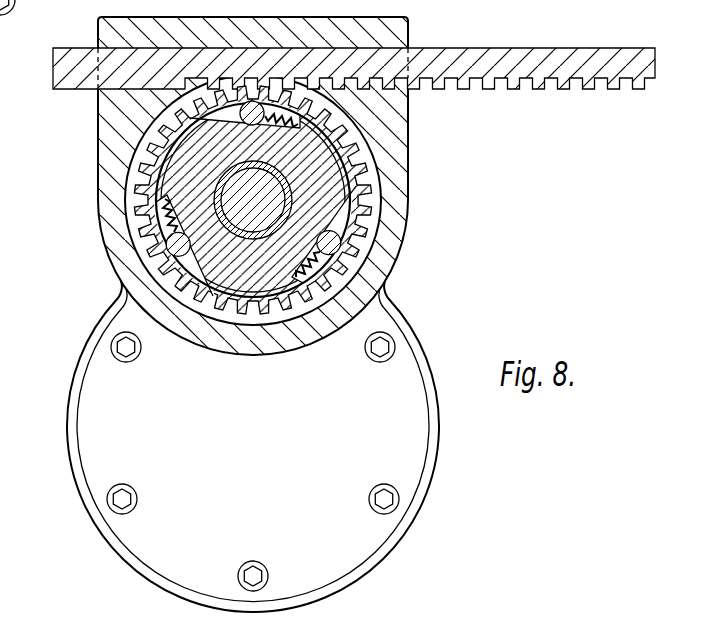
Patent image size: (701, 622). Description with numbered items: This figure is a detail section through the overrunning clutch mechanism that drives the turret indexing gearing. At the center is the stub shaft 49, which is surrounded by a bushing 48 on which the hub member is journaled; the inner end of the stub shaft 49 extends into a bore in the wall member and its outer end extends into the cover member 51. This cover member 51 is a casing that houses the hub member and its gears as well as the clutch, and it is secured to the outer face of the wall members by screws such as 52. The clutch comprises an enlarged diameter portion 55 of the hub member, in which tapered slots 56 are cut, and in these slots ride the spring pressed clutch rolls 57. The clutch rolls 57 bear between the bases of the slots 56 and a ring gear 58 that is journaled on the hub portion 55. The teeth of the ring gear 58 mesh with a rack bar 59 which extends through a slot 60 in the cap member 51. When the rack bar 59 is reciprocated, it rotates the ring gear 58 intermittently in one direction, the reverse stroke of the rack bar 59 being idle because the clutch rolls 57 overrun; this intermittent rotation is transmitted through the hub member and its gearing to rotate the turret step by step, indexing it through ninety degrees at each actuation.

The bushing 48 is at (260, 232).
The stub shaft 49 is at (240, 212).
The cover member 51 is at (383, 423).
The screws 52 is at (387, 342).
The enlarged diameter portion of the hub member 55 is at (332, 178).
The tapered slots 56 is at (342, 218).
The spring pressed clutch rolls 57 is at (357, 251).
The ring gear 58 is at (357, 143).
The rack bar 59 is at (463, 57).
The slot 60 is at (378, 50).